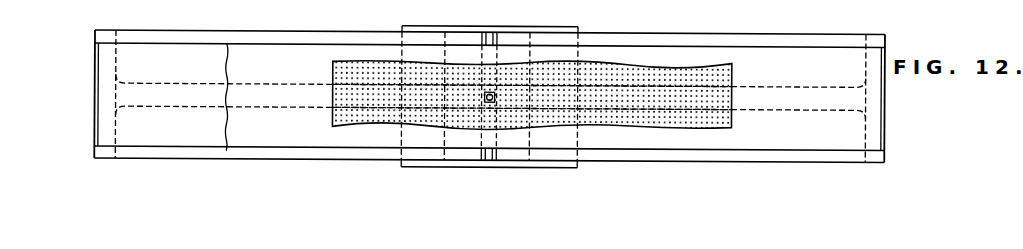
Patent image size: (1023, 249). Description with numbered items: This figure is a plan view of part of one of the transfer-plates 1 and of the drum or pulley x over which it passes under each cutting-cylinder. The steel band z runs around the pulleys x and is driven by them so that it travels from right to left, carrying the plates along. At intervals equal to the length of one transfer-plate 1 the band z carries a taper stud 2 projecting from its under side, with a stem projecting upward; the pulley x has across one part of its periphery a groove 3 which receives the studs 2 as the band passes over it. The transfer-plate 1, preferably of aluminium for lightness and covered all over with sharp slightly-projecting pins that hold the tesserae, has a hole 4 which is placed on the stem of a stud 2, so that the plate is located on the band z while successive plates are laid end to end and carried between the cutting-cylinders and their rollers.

The transfer-plate 1 is at (558, 73).
The taper stud 2 is at (490, 95).
The groove 3 is at (492, 160).
The hole 4 is at (491, 98).
The pulley x is at (497, 30).
The steel band z is at (237, 97).